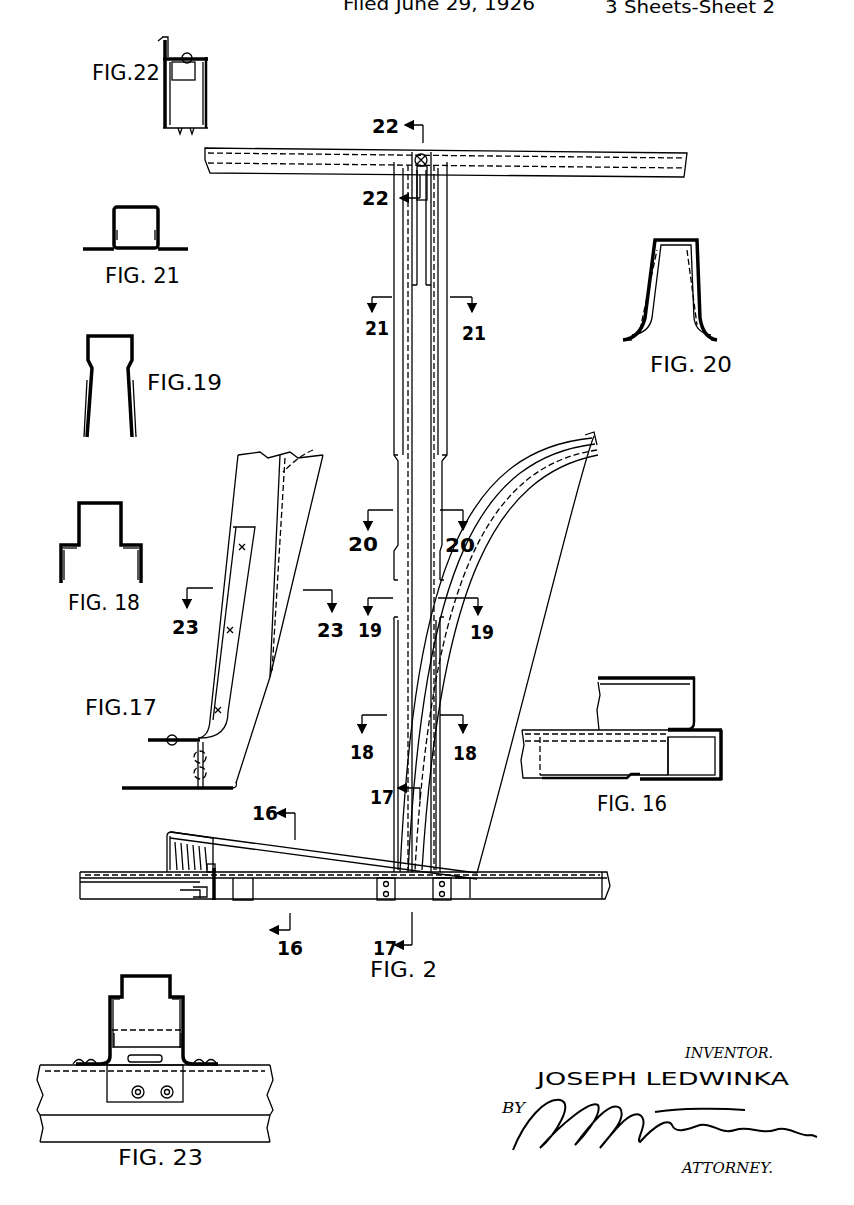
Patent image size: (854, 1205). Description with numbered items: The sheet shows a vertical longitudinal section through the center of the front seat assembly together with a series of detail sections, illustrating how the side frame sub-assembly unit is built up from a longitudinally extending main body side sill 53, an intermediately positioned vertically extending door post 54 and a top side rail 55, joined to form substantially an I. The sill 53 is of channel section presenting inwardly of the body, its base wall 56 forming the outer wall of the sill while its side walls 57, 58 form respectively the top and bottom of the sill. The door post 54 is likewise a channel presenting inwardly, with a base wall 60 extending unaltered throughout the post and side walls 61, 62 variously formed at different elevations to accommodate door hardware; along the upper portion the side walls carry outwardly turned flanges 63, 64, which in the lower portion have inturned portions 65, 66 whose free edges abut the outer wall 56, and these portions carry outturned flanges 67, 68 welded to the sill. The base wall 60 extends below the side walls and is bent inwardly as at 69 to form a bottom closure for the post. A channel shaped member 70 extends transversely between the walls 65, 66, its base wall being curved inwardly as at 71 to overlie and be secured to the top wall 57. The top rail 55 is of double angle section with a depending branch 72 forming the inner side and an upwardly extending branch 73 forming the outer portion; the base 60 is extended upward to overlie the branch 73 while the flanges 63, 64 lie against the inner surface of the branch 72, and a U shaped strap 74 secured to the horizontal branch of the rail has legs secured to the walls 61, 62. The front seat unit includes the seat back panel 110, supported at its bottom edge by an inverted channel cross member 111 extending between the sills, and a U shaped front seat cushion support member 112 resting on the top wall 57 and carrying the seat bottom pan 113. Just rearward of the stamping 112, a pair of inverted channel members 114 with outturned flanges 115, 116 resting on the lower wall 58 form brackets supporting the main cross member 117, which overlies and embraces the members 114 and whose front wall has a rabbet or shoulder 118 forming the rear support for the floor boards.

In FIG. 2, the main body side sill 53 is at (593, 897).
In FIG. 2, the door post 54 is at (418, 395).
In FIG. 2, the top side rail 55 is at (523, 156).
In FIG. 22, the top side rail 55 is at (170, 55).
In FIG. 16, the base wall 56 is at (723, 750).
In FIG. 2, the side wall (top wall of sill) 57 is at (540, 880).
In FIG. 17, the side wall (top wall of sill) 57 is at (150, 742).
In FIG. 16, the side wall (top wall of sill) 57 is at (707, 730).
In FIG. 23, the side wall (top wall of sill) 57 is at (155, 1090).
In FIG. 2, the side wall (bottom wall of sill) 58 is at (547, 903).
In FIG. 17, the side wall (bottom wall of sill) 58 is at (148, 790).
In FIG. 16, the side wall (bottom wall of sill) 58 is at (695, 782).
In FIG. 23, the side wall (bottom wall of sill) 58 is at (257, 1127).
In FIG. 2, the base wall of door post 60 is at (420, 255).
In FIG. 22, the base wall of door post 60 is at (163, 100).
In FIG. 21, the base wall of door post 60 is at (140, 205).
In FIG. 19, the base wall of door post 60 is at (98, 330).
In FIG. 18, the base wall of door post 60 is at (101, 532).
In FIG. 20, the base wall of door post 60 is at (670, 273).
In FIG. 17, the base wall of door post 60 is at (317, 492).
In FIG. 23, the base wall of door post 60 is at (147, 1009).
In FIG. 2, the side wall of door post 61 is at (410, 276).
In FIG. 22, the side wall of door post 61 is at (187, 110).
In FIG. 21, the side wall of door post 61 is at (112, 222).
In FIG. 19, the side wall of door post 61 is at (87, 350).
In FIG. 17, the side wall of door post 61 is at (290, 517).
In FIG. 2, the side wall of door post 62 is at (435, 352).
In FIG. 21, the side wall of door post 62 is at (162, 230).
In FIG. 19, the side wall of door post 62 is at (133, 348).
In FIG. 2, the outwardly turned flange 63 is at (407, 245).
In FIG. 22, the outwardly turned flange 63 is at (203, 115).
In FIG. 21, the outwardly turned flange 63 is at (90, 255).
In FIG. 18, the outwardly turned flange 63 is at (72, 542).
In FIG. 20, the outwardly turned flange 63 is at (630, 337).
In FIG. 17, the outwardly turned flange 63 is at (318, 450).
In FIG. 23, the outwardly turned flange 63 is at (118, 995).
In FIG. 2, the outwardly turned flange 64 is at (445, 243).
In FIG. 21, the outwardly turned flange 64 is at (190, 250).
In FIG. 18, the outwardly turned flange 64 is at (137, 538).
In FIG. 20, the outwardly turned flange 64 is at (713, 333).
In FIG. 23, the outwardly turned flange 64 is at (185, 992).
In FIG. 18, the inturned portion 65 is at (67, 567).
In FIG. 17, the inturned portion 65 is at (247, 502).
In FIG. 23, the inturned portion 65 is at (108, 1015).
In FIG. 18, the inturned portion 66 is at (143, 567).
In FIG. 23, the inturned portion 66 is at (187, 1005).
In FIG. 2, the outturned flange 67 is at (380, 890).
In FIG. 23, the outturned flange 67 is at (73, 1058).
In FIG. 2, the outturned flange 68 is at (440, 890).
In FIG. 23, the outturned flange 68 is at (217, 1055).
In FIG. 17, the inwardly bent portion of base wall 69 is at (217, 780).
In FIG. 17, the channel shaped member 70 is at (222, 630).
In FIG. 23, the channel shaped member 70 is at (117, 1045).
In FIG. 17, the inwardly curved portion of base wall 71 is at (187, 735).
In FIG. 23, the inwardly curved portion of base wall 71 is at (117, 1083).
In FIG. 2, the depending branch 72 is at (598, 167).
In FIG. 22, the depending branch 72 is at (208, 72).
In FIG. 22, the upwardly extending branch 73 is at (168, 40).
In FIG. 2, the U shaped strap 74 is at (423, 177).
In FIG. 22, the U shaped strap 74 is at (195, 80).
In FIG. 2, the seat back panel 110 is at (578, 527).
In FIG. 2, the cross member 111 is at (483, 890).
In FIG. 2, the front seat cushion support member 112 is at (167, 850).
In FIG. 16, the front seat cushion support member 112 is at (697, 688).
In FIG. 2, the seat bottom pan 113 is at (305, 843).
In FIG. 16, the seat bottom pan 113 is at (628, 675).
In FIG. 2, the inverted channel members 114 is at (220, 887).
In FIG. 16, the inverted channel members 114 is at (693, 762).
In FIG. 2, the outturned flange 115 is at (205, 893).
In FIG. 2, the outturned flange 116 is at (250, 900).
In FIG. 2, the main cross member 117 is at (195, 890).
In FIG. 16, the main cross member 117 is at (530, 757).
In FIG. 2, the rabbet or shoulder 118 is at (214, 868).